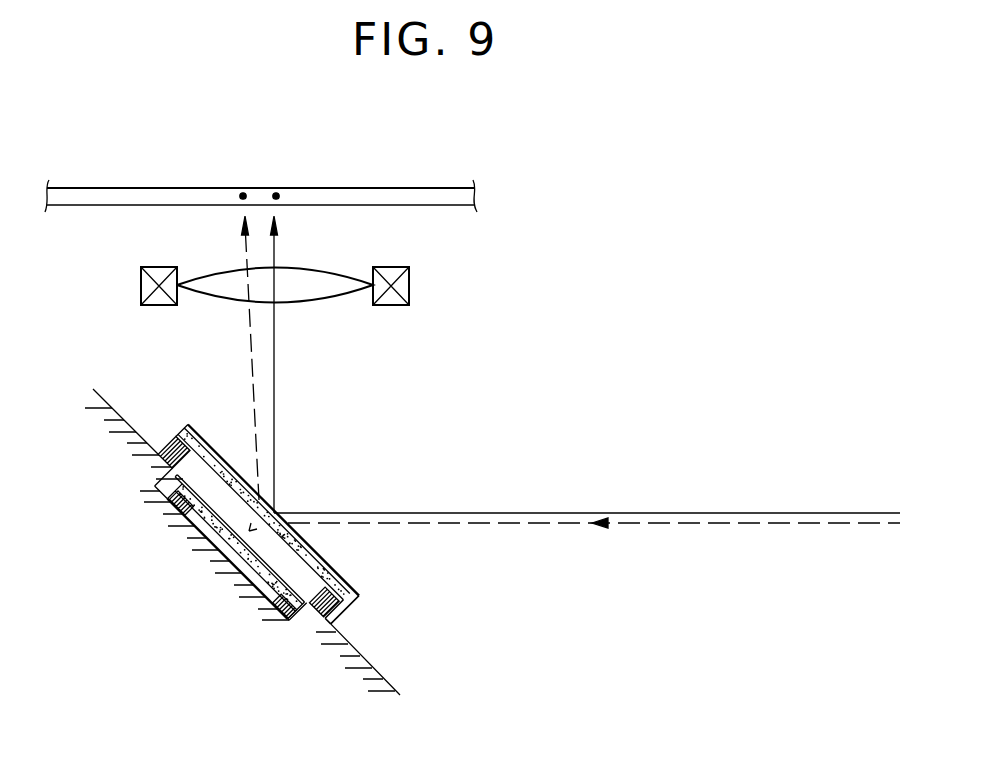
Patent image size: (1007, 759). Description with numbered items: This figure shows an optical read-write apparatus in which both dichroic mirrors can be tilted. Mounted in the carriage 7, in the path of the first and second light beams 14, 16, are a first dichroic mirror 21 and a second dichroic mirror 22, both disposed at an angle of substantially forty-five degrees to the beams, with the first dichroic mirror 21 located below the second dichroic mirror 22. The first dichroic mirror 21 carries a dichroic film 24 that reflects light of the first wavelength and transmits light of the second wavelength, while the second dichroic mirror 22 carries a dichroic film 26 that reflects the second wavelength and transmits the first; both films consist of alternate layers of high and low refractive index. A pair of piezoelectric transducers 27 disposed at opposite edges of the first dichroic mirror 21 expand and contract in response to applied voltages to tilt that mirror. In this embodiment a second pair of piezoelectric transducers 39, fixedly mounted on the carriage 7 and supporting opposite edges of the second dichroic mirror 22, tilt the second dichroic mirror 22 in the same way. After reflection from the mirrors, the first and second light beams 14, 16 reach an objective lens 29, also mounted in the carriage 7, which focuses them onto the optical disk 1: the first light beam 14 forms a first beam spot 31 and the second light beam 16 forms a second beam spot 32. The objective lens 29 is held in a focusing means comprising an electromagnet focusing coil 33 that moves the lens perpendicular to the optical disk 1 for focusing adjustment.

The optical disk 1 is at (432, 185).
The first beam spot 31 is at (241, 193).
The second beam spot 32 is at (277, 193).
The objective lens 29 is at (348, 272).
The electromagnet focusing coil 33 is at (139, 283).
The second light beam 16 is at (721, 512).
The first light beam 14 is at (721, 524).
The carriage 7 is at (385, 677).
The second dichroic mirror 22 is at (347, 598).
The dichroic film 26 is at (337, 575).
The piezoelectric transducers 39 is at (171, 445).
The first dichroic mirror 21 is at (162, 494).
The dichroic film 24 is at (175, 480).
The piezoelectric transducers 27 is at (185, 518).